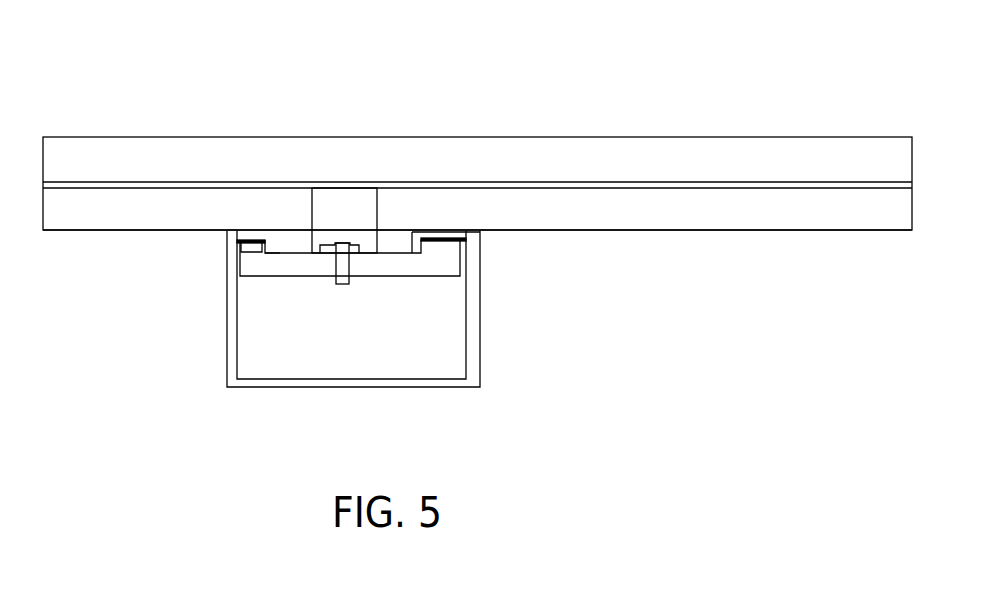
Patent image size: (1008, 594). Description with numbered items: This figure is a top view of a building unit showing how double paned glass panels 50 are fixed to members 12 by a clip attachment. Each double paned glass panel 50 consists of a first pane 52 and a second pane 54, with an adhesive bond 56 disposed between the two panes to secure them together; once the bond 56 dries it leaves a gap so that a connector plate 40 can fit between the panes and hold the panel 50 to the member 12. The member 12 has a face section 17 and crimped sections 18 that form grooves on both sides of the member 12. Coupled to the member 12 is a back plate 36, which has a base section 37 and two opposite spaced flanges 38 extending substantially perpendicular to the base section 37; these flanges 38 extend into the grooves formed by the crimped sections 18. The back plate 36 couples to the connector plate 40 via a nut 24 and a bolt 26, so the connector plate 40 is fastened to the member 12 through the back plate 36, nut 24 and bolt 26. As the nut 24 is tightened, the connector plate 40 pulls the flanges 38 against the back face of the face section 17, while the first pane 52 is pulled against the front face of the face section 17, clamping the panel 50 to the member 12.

The member 12 is at (480, 357).
The face section 17 is at (245, 238).
The crimped section 18 is at (277, 245).
The nut 24 is at (323, 250).
The bolt 26 is at (345, 287).
The back plate 36 is at (314, 273).
The base section 37 is at (273, 268).
The flange 38 is at (247, 251).
The connector plate 40 is at (355, 197).
The double paned glass panel 50 is at (477, 150).
The first pane 52 is at (805, 218).
The second pane 54 is at (252, 148).
The adhesive bond 56 is at (441, 188).